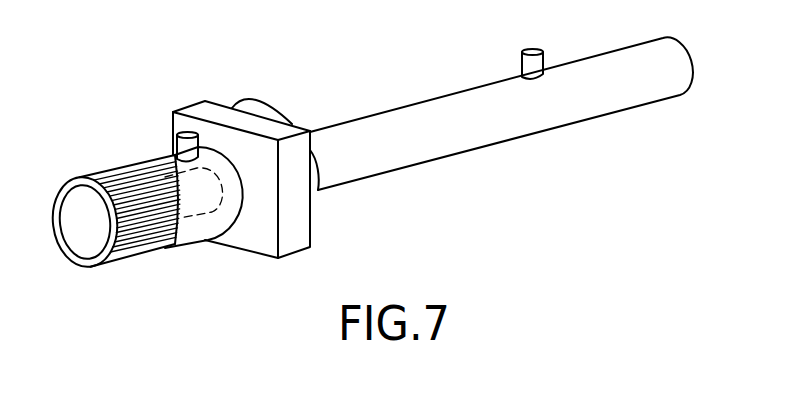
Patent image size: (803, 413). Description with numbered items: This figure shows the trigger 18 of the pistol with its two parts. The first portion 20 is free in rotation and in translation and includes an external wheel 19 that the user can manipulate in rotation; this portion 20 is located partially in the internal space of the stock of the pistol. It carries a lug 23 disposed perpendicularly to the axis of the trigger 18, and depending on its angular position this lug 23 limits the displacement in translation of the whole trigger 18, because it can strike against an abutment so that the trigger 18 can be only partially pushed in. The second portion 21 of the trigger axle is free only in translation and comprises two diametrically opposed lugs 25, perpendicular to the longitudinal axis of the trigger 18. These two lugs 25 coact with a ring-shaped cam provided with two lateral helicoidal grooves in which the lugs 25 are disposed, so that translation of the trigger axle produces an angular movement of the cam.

The trigger 18 is at (187, 232).
The external wheel 19 is at (123, 177).
The first portion 20 is at (207, 243).
The second portion 21 is at (630, 82).
The lug 23 is at (183, 150).
The lugs 25 is at (538, 63).